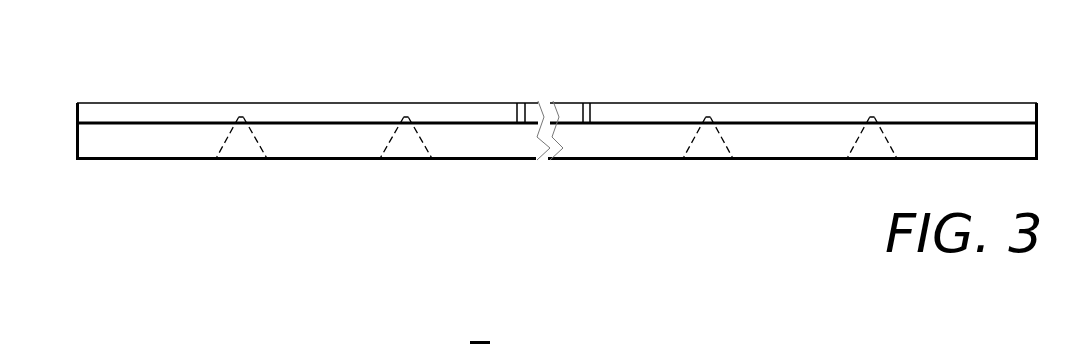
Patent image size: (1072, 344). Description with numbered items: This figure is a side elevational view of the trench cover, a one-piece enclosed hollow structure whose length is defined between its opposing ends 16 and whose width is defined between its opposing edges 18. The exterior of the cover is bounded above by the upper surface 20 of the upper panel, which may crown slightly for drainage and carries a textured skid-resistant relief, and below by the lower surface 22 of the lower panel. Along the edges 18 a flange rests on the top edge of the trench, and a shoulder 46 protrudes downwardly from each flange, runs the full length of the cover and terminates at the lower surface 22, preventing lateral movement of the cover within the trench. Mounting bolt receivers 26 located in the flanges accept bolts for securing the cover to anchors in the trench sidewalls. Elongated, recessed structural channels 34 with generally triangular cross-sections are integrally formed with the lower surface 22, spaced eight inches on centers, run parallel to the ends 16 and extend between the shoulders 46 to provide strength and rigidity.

The opposing ends 16 is at (77, 109).
The opposing edges 18 is at (338, 113).
The upper surface 20 is at (440, 103).
The lower surface 22 is at (308, 158).
The mounting bolt receivers 26 is at (583, 103).
The structural channels 34 is at (718, 134).
The shoulder 46 is at (793, 158).